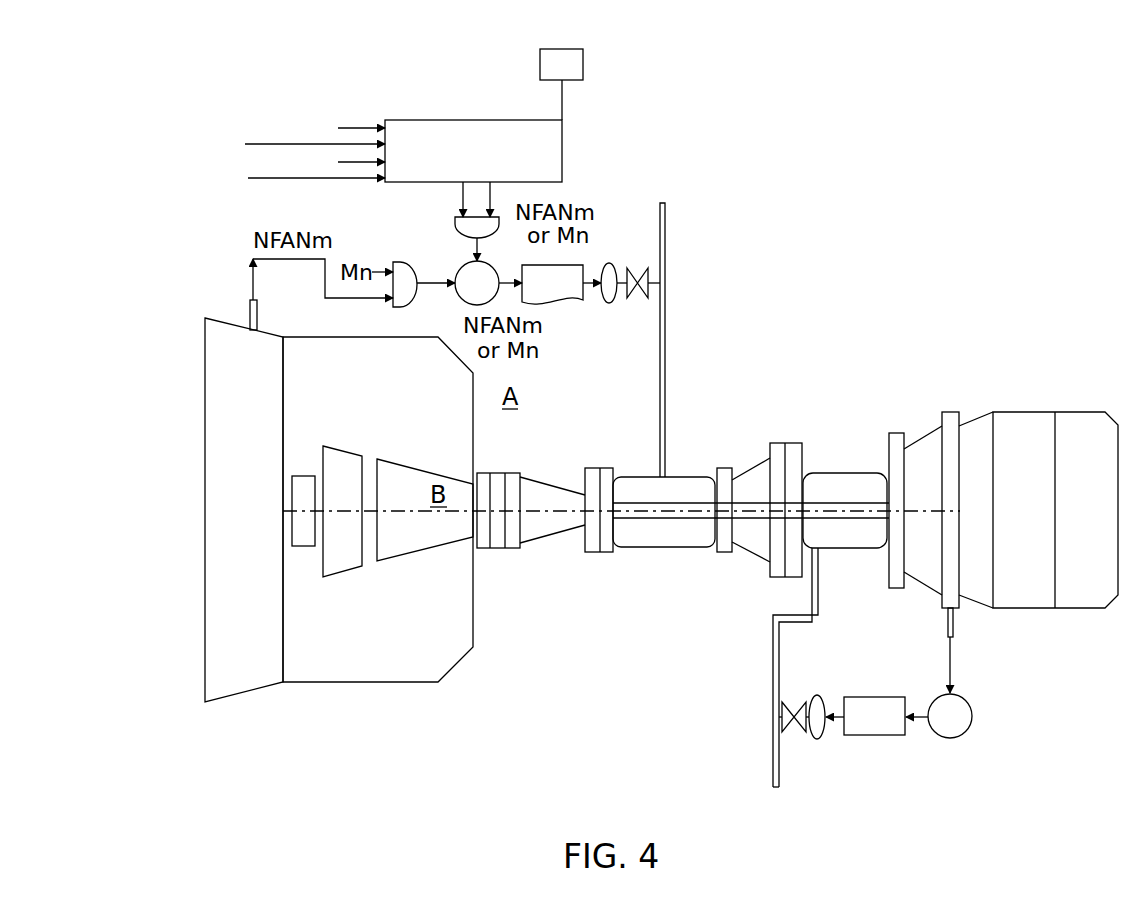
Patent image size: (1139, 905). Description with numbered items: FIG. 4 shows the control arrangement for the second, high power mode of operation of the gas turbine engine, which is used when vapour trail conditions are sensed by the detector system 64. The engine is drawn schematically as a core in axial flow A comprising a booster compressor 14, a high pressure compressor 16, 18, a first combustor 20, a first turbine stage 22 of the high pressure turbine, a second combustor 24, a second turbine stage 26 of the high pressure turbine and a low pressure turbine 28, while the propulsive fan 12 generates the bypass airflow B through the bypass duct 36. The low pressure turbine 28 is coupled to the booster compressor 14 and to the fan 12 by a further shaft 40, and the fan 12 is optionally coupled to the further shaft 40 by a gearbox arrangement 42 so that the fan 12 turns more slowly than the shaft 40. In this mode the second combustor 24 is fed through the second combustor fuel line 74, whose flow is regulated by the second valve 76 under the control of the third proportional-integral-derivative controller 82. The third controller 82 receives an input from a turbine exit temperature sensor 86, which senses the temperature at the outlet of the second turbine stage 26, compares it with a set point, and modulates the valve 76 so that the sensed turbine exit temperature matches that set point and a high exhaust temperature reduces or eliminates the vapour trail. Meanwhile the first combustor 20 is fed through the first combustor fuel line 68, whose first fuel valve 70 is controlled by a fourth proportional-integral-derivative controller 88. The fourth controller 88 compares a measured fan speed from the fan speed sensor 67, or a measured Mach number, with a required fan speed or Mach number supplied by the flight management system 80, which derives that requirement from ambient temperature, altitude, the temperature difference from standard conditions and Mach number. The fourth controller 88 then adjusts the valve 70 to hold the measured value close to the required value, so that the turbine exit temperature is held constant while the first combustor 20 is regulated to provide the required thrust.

The propulsive fan 12 is at (205, 405).
The booster compressor 14 is at (333, 448).
The high pressure compressor 16 is at (437, 472).
The high pressure compressor 18 is at (537, 478).
The first combustor 20 is at (645, 476).
The first turbine stage 22 is at (756, 462).
The second combustor 24 is at (840, 472).
The second turbine stage 26 is at (925, 432).
The low pressure turbine 28 is at (980, 410).
The bypass duct 36 is at (397, 418).
The further shaft 40 is at (400, 512).
The gearbox arrangement 42 is at (303, 547).
The detector system 64 is at (583, 63).
The fan speed sensor 67 is at (250, 310).
The first combustor fuel line 68 is at (665, 225).
The first fuel valve 70 is at (630, 268).
The second combustor fuel line 74 is at (772, 762).
The second valve 76 is at (785, 705).
The flight management system 80 is at (410, 120).
The third PID controller 82 is at (870, 735).
The T44 sensor 86 is at (955, 630).
The fourth PID controller 88 is at (553, 305).